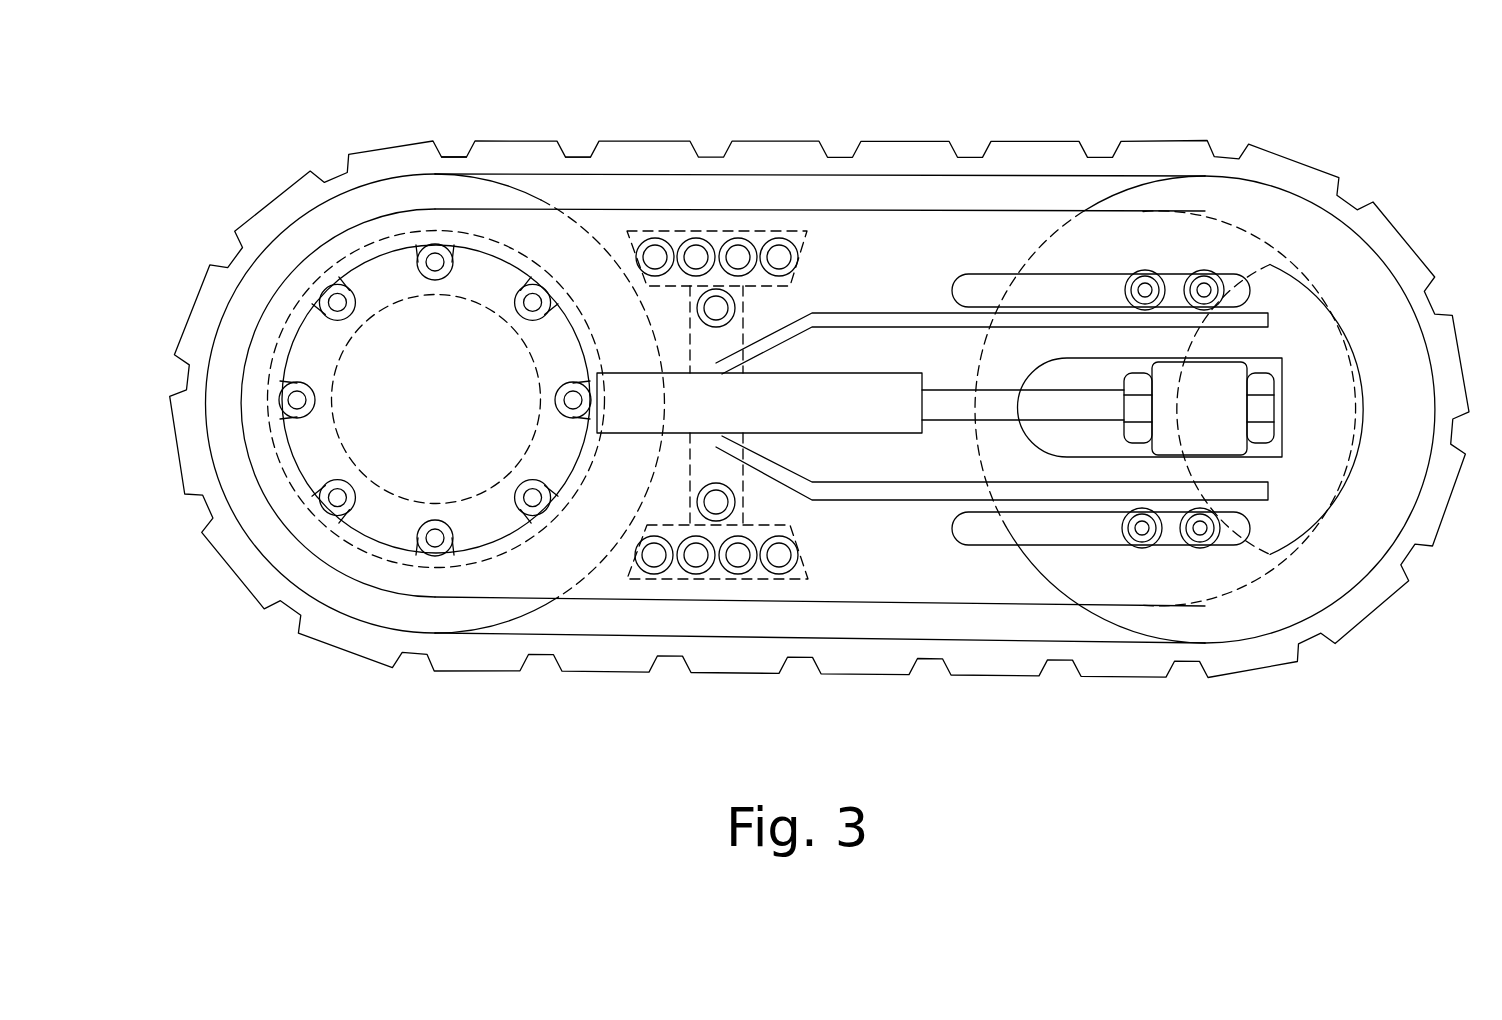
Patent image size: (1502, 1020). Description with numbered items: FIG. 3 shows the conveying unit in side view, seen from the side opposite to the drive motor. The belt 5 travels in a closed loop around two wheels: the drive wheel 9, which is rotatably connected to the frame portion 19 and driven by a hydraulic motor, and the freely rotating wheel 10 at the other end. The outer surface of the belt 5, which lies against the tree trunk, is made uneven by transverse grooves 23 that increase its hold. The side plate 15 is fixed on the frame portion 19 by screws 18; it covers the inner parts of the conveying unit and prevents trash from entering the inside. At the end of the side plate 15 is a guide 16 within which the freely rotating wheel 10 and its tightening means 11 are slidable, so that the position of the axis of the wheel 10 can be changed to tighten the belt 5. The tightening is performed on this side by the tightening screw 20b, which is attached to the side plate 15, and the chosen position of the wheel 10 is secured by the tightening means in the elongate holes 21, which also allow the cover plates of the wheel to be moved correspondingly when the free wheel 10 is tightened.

The belt 5 is at (375, 163).
The transverse grooves 23 is at (585, 150).
The drive wheel 9 is at (287, 545).
The side plate 15 is at (888, 243).
The frame portion 19 is at (695, 232).
The screws 18 is at (652, 556).
The tightening screw 20b is at (957, 407).
The elongate holes 21 is at (966, 285).
The guide 16 is at (1090, 356).
The tightening means 11 is at (1137, 410).
The freely rotating wheel 10 is at (1352, 526).